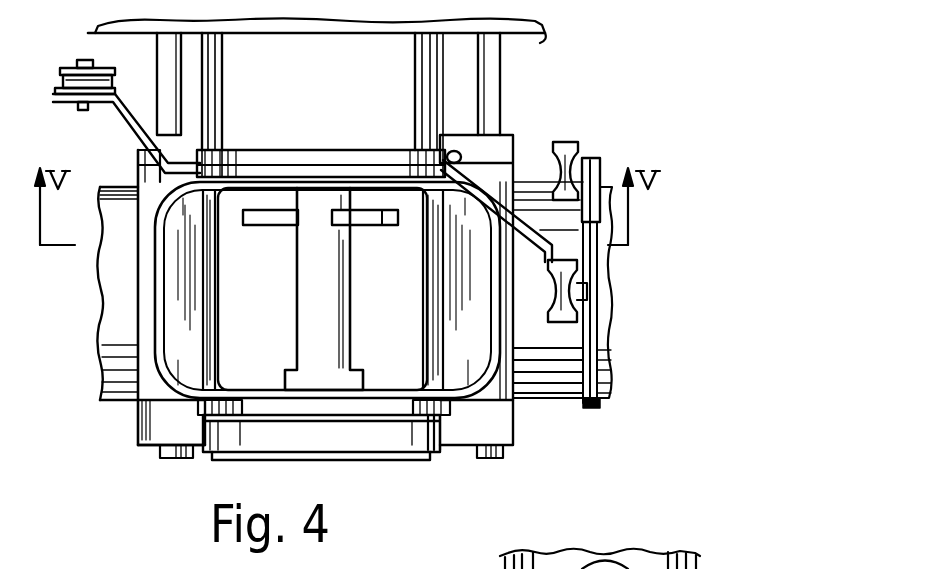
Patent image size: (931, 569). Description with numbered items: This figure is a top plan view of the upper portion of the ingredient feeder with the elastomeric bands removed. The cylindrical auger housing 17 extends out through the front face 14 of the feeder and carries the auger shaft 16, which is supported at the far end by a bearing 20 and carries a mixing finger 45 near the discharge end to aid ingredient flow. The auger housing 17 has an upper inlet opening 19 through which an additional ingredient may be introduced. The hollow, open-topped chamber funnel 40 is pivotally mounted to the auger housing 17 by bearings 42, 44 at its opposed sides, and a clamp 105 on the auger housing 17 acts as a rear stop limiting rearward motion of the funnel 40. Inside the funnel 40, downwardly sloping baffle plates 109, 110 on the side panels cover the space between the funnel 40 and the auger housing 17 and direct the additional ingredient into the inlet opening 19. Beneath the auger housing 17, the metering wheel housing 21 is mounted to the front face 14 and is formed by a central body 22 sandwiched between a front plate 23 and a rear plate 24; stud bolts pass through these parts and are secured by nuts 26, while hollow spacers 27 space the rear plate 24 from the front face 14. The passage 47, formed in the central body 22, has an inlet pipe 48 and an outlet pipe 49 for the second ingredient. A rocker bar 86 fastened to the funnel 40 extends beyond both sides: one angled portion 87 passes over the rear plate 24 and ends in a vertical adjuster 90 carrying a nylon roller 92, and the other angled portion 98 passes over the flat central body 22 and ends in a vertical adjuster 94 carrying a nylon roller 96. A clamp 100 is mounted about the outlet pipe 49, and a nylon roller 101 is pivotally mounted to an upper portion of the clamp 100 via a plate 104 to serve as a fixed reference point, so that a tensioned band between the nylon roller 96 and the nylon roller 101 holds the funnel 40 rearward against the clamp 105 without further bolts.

The front face 14 is at (549, 44).
The hollow spacer 27 is at (182, 60).
The auger housing 17 is at (446, 60).
The angled portion 98 is at (513, 185).
The bearing 44 is at (204, 152).
The clamp 105 is at (325, 150).
The angled portion 87 is at (140, 106).
The nylon roller 92 is at (58, 70).
The vertical adjuster 90 is at (79, 107).
The rear plate 24 is at (136, 152).
The chamber funnel 40 is at (152, 290).
The inlet opening 19 is at (218, 372).
The baffle plate 109 is at (195, 332).
The baffle plate 110 is at (456, 312).
The auger shaft 16 is at (351, 352).
The mixing finger 45 is at (366, 226).
The central body 22 is at (138, 330).
The rocker bar 86 is at (150, 178).
The passage 47 is at (102, 369).
The inlet pipe 48 is at (104, 394).
The metering wheel housing 21 is at (137, 420).
The front plate 23 is at (140, 445).
The nut 26 is at (173, 460).
The bearing 20 is at (349, 460).
The bearing 42 is at (421, 460).
The nylon roller 101 is at (570, 142).
The plate 104 is at (596, 158).
The outlet pipe 49 is at (611, 370).
The nylon roller 96 is at (582, 312).
The vertical adjuster 94 is at (548, 323).
The clamp 100 is at (597, 410).